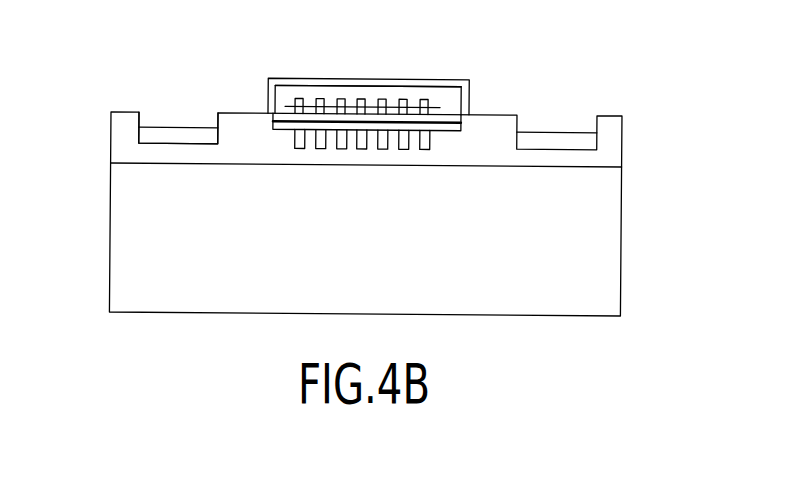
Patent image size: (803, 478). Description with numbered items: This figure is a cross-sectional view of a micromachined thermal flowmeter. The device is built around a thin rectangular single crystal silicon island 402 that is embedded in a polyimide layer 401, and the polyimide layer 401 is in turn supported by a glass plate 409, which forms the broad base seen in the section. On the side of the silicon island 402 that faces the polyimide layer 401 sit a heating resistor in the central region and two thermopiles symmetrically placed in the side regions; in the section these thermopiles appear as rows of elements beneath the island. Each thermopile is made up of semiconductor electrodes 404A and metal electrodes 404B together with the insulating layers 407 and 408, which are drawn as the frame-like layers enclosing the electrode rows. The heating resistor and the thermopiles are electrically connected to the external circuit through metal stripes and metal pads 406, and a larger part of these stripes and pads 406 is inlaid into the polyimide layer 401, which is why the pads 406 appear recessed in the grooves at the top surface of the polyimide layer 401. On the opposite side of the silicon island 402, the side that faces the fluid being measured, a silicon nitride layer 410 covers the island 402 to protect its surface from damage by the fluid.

The polyimide layer 401 is at (607, 123).
The single crystal silicon island 402 is at (432, 88).
The semiconductor electrodes 404A is at (386, 133).
The metal electrodes 404B is at (361, 97).
The metal pads 406 is at (157, 135).
The insulating layer 407 is at (277, 113).
The insulating layer 408 is at (455, 128).
The glass plate 409 is at (193, 178).
The silicon nitride layer 410 is at (300, 78).